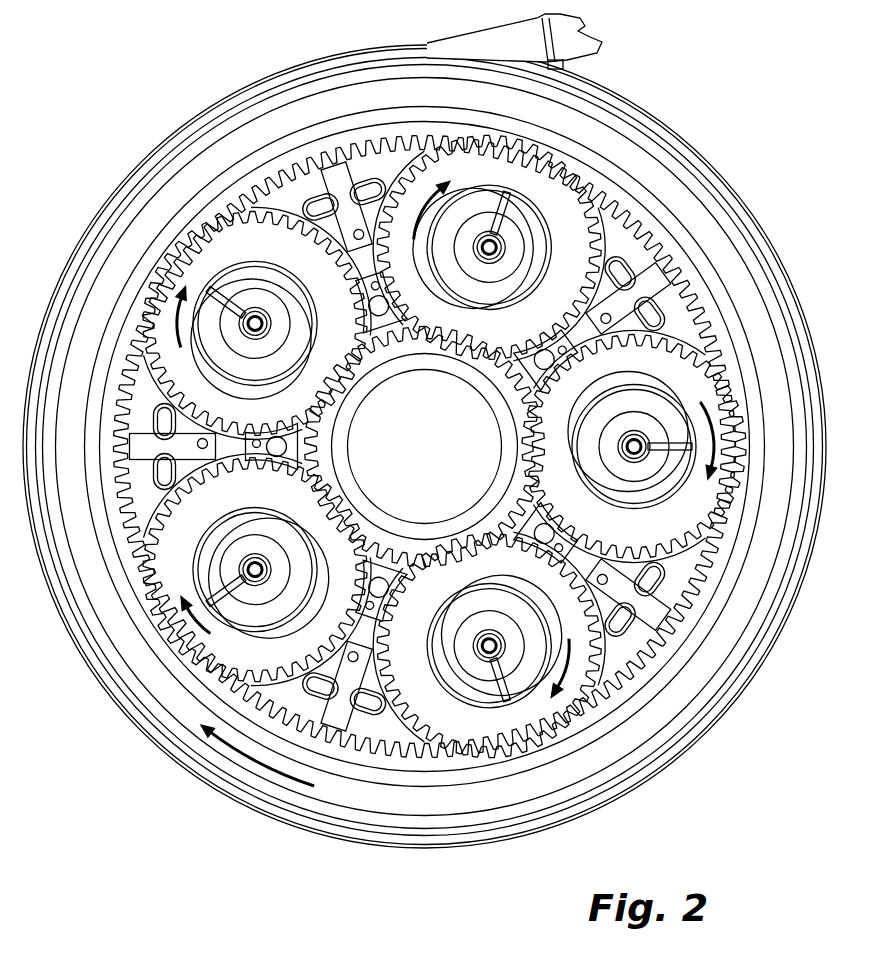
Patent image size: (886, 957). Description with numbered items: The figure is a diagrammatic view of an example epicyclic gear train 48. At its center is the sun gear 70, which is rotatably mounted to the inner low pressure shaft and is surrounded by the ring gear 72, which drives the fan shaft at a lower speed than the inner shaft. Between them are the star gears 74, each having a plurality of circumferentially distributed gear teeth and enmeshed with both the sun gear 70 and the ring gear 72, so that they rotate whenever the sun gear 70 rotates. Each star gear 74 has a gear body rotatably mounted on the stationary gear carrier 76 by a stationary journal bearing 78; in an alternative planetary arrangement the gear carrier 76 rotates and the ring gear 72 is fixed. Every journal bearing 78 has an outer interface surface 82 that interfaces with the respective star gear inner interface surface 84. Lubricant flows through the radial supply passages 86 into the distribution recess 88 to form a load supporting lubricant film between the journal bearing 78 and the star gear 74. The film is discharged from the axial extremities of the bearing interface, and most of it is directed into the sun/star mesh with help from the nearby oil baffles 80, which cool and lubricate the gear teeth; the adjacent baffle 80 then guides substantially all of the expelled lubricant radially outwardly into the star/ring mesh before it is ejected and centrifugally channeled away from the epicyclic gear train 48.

The epicyclic gear train 48 is at (734, 152).
The sun gear 70 is at (413, 457).
The ring gear 72 is at (412, 772).
The star gears 74 is at (463, 179).
The gear carrier 76 is at (128, 305).
The journal bearings 78 is at (478, 301).
The oil baffles 80 is at (287, 200).
The journal bearing outer interface surface 82 is at (455, 296).
The star gear inner interface surface 84 is at (428, 252).
The radial supply passages 86 is at (178, 300).
The distribution recess 88 is at (457, 190).